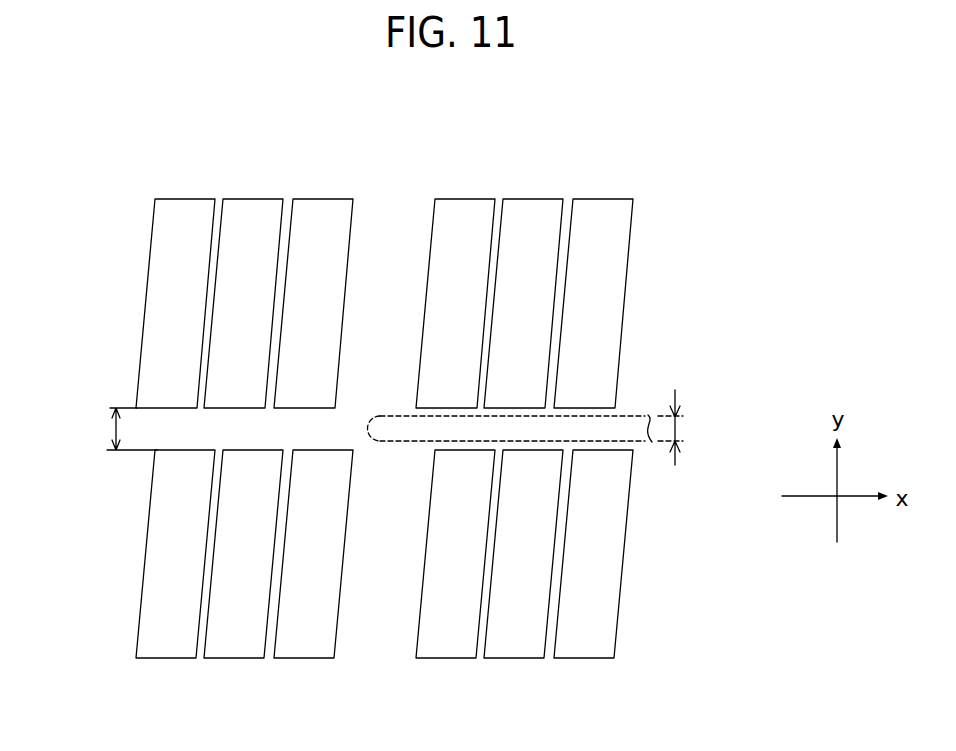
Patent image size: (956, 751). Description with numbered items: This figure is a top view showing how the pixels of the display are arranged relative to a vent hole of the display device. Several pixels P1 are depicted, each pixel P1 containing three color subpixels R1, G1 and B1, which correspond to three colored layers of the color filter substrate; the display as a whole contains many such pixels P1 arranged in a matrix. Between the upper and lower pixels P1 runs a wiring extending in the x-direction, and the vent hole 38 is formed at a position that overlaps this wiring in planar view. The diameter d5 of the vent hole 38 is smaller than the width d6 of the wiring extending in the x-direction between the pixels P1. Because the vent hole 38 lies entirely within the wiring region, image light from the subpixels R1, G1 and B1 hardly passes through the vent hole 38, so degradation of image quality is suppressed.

The red subpixel R1 is at (187, 198).
The green subpixel G1 is at (255, 198).
The blue subpixel B1 is at (325, 198).
The pixel P1 is at (110, 296).
The vent hole 38 is at (383, 441).
The diameter of vent hole d5 is at (694, 427).
The width of wiring d6 is at (115, 429).